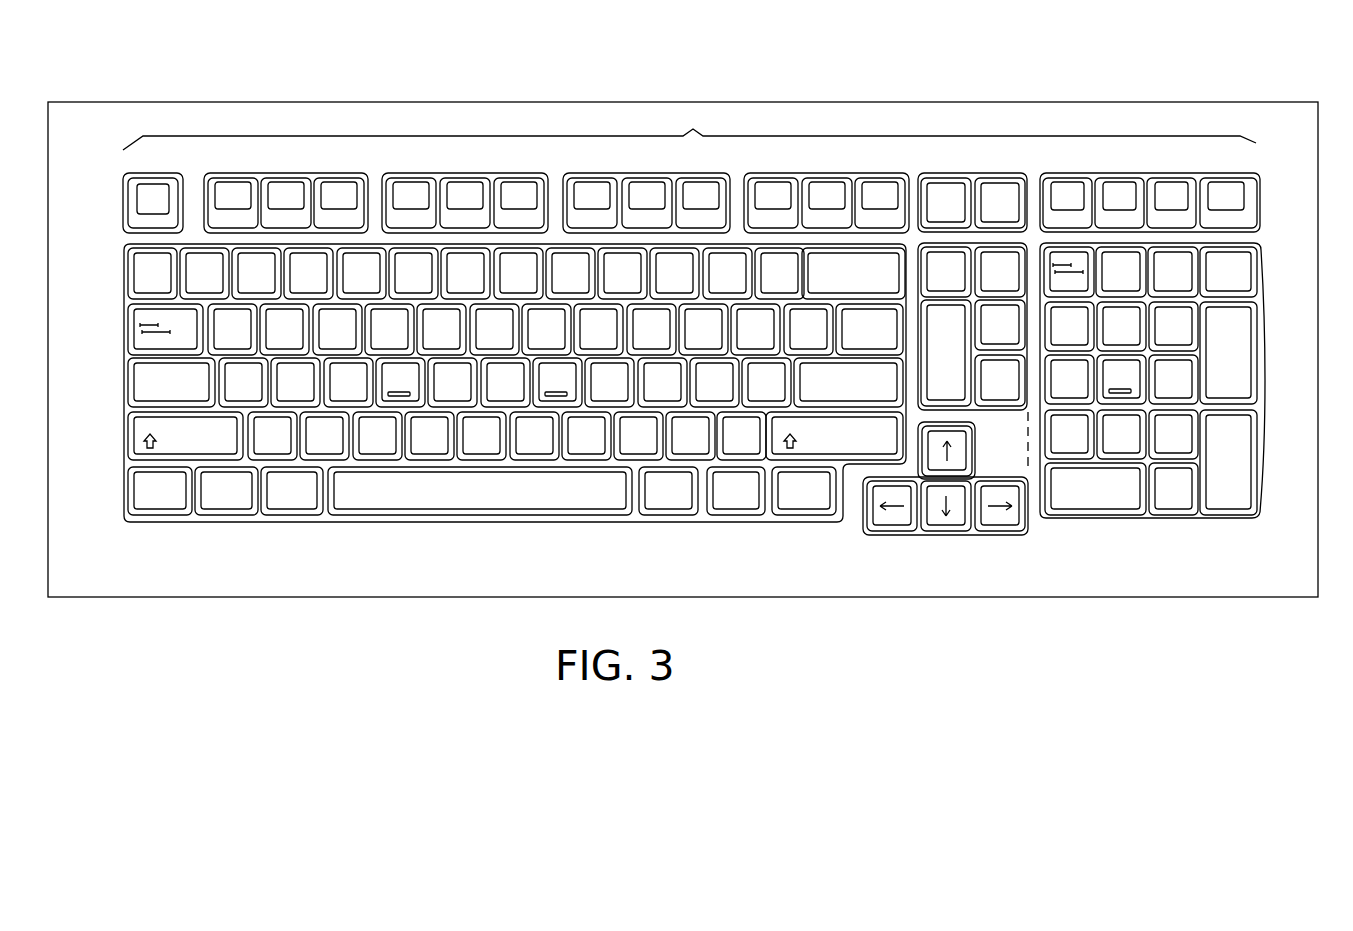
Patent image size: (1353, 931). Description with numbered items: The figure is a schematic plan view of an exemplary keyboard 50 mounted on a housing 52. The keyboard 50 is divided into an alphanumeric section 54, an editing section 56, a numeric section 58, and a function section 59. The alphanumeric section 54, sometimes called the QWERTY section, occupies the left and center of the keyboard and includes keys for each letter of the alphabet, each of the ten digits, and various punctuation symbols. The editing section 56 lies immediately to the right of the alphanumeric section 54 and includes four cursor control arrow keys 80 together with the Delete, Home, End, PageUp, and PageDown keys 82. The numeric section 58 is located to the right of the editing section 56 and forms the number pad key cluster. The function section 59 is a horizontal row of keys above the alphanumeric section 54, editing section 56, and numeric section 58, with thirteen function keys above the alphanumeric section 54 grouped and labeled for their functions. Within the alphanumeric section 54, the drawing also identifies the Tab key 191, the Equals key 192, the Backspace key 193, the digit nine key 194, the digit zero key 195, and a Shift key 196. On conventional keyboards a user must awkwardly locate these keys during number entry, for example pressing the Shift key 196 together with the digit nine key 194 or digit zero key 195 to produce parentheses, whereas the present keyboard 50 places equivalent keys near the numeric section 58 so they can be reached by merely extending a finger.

The keyboard 50 is at (928, 86).
The housing 52 is at (402, 102).
The alphanumeric section 54 is at (349, 522).
The editing section 56 is at (1020, 462).
The numeric section 58 is at (1114, 518).
The function section 59 is at (691, 169).
The cursor control arrow keys 80 is at (946, 535).
The Delete, Home, End, PageUp, and PageDown keys 82 is at (1000, 409).
The Tab key 191 is at (135, 337).
The Equals key 192 is at (760, 256).
The Backspace key 193 is at (883, 258).
The Digit 9 key 194 is at (623, 260).
The Digit 0 key 195 is at (678, 260).
The Shift key 196 is at (140, 435).